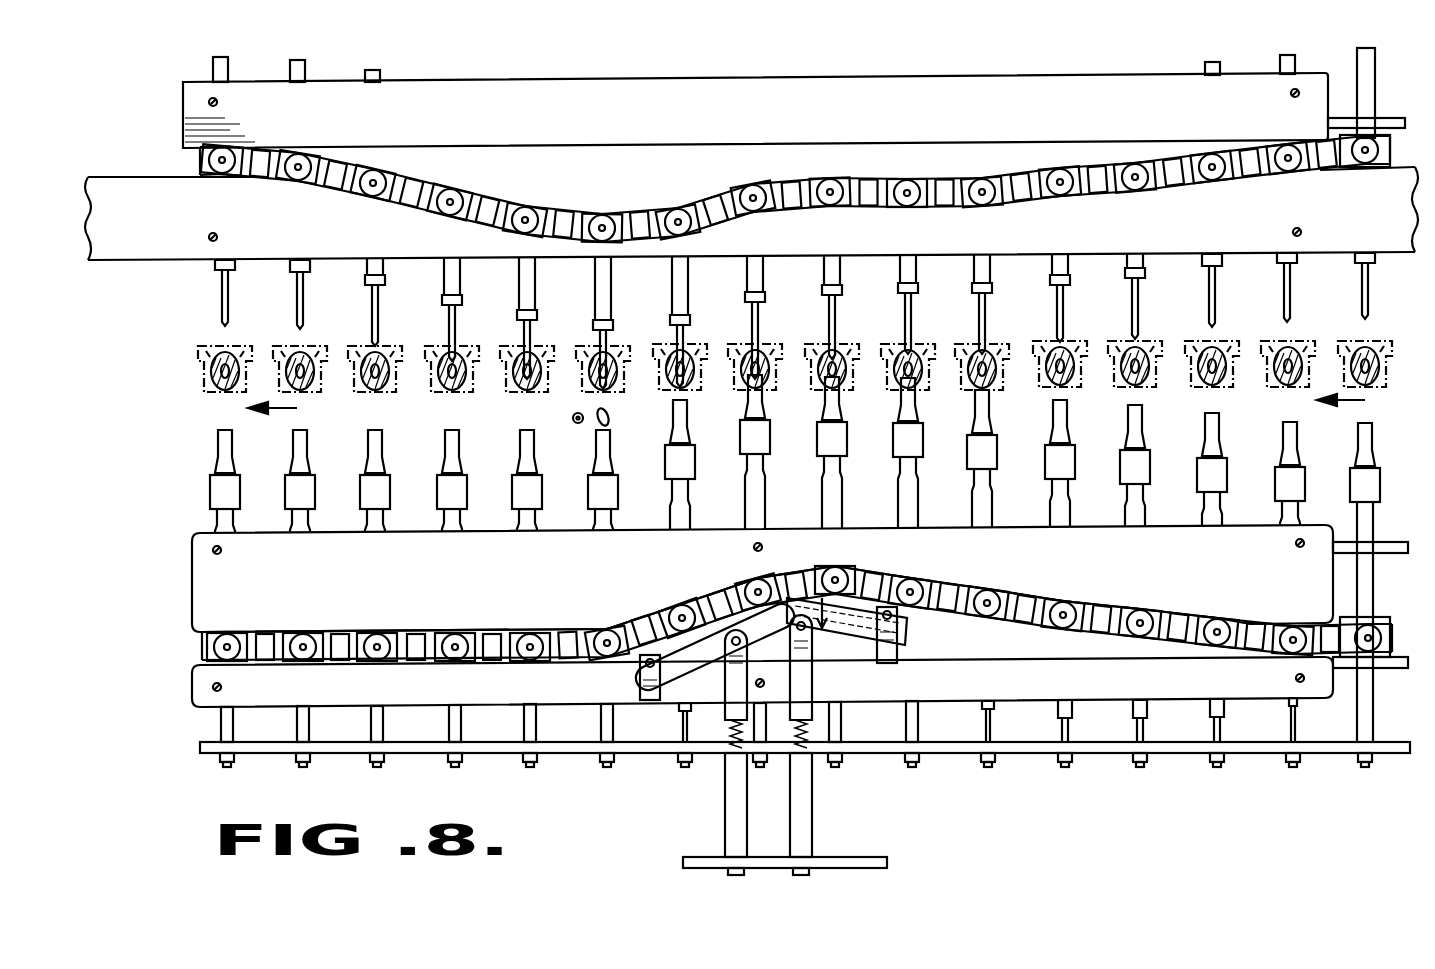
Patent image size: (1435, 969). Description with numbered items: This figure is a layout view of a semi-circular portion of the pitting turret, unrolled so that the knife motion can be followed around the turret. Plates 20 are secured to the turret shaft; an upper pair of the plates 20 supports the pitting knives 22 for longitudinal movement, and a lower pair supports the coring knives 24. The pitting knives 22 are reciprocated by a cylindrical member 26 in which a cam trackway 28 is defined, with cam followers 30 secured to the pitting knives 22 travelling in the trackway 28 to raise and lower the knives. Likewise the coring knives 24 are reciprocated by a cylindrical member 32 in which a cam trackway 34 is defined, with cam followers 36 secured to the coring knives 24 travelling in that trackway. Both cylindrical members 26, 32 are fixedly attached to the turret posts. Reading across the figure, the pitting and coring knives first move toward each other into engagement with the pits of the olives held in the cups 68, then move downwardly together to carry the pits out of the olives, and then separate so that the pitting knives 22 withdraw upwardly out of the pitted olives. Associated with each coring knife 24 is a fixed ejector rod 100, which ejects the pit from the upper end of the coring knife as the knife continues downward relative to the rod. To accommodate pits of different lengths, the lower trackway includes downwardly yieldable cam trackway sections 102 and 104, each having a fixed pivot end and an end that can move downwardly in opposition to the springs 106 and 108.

The plates 20 is at (1400, 117).
The pitting knives 22 is at (1362, 290).
The coring knives 24 is at (1284, 436).
The cylindrical member 26 is at (1300, 90).
The cam trackway 28 is at (1022, 172).
The cam followers 30 is at (1075, 166).
The cylindrical member 32 is at (202, 588).
The cam trackway 34 is at (420, 642).
The cam followers 36 is at (1130, 630).
The container cups 68 is at (1390, 348).
The ejector rod 100 is at (992, 728).
The cam trackway section 102 is at (862, 626).
The cam trackway section 104 is at (706, 652).
The spring 106 is at (814, 750).
The spring 108 is at (728, 750).